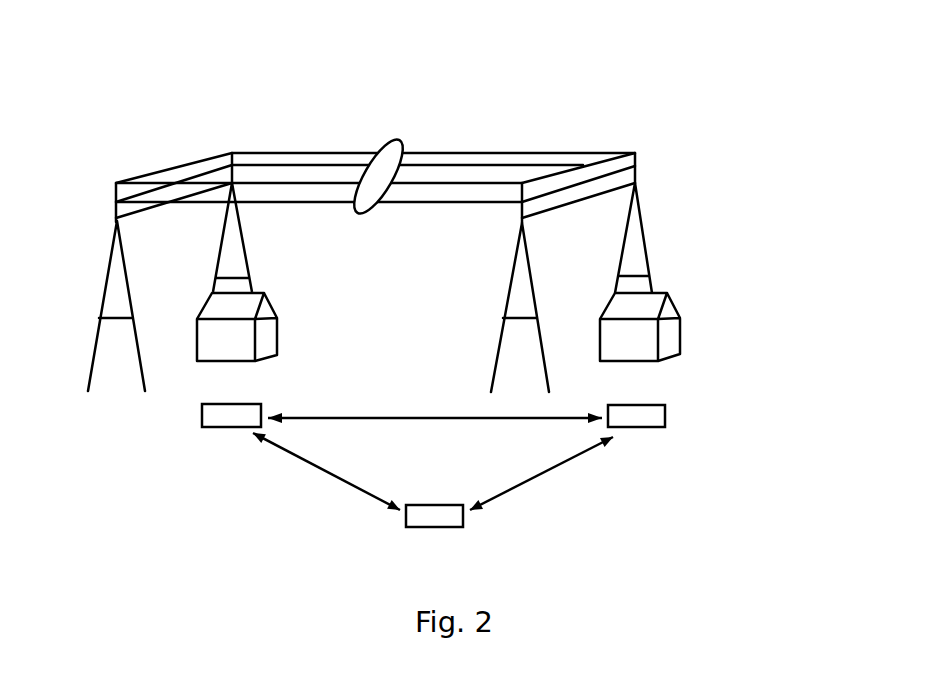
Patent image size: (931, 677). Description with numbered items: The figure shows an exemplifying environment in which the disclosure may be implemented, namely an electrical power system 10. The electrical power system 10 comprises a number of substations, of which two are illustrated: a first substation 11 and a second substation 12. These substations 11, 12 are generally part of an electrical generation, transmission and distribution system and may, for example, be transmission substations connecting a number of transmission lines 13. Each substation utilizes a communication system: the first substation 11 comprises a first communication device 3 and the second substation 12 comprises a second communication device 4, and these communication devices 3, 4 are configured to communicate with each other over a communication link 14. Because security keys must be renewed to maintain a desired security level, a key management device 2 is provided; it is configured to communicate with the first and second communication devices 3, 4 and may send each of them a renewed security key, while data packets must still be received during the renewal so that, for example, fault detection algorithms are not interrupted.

The electrical power system 10 is at (693, 102).
The transmission lines 13 is at (382, 148).
The first substation 11 is at (267, 333).
The second substation 12 is at (672, 336).
The first communication device 3 is at (208, 419).
The second communication device 4 is at (660, 419).
The key management device 2 is at (457, 522).
The communication link 14 is at (435, 409).